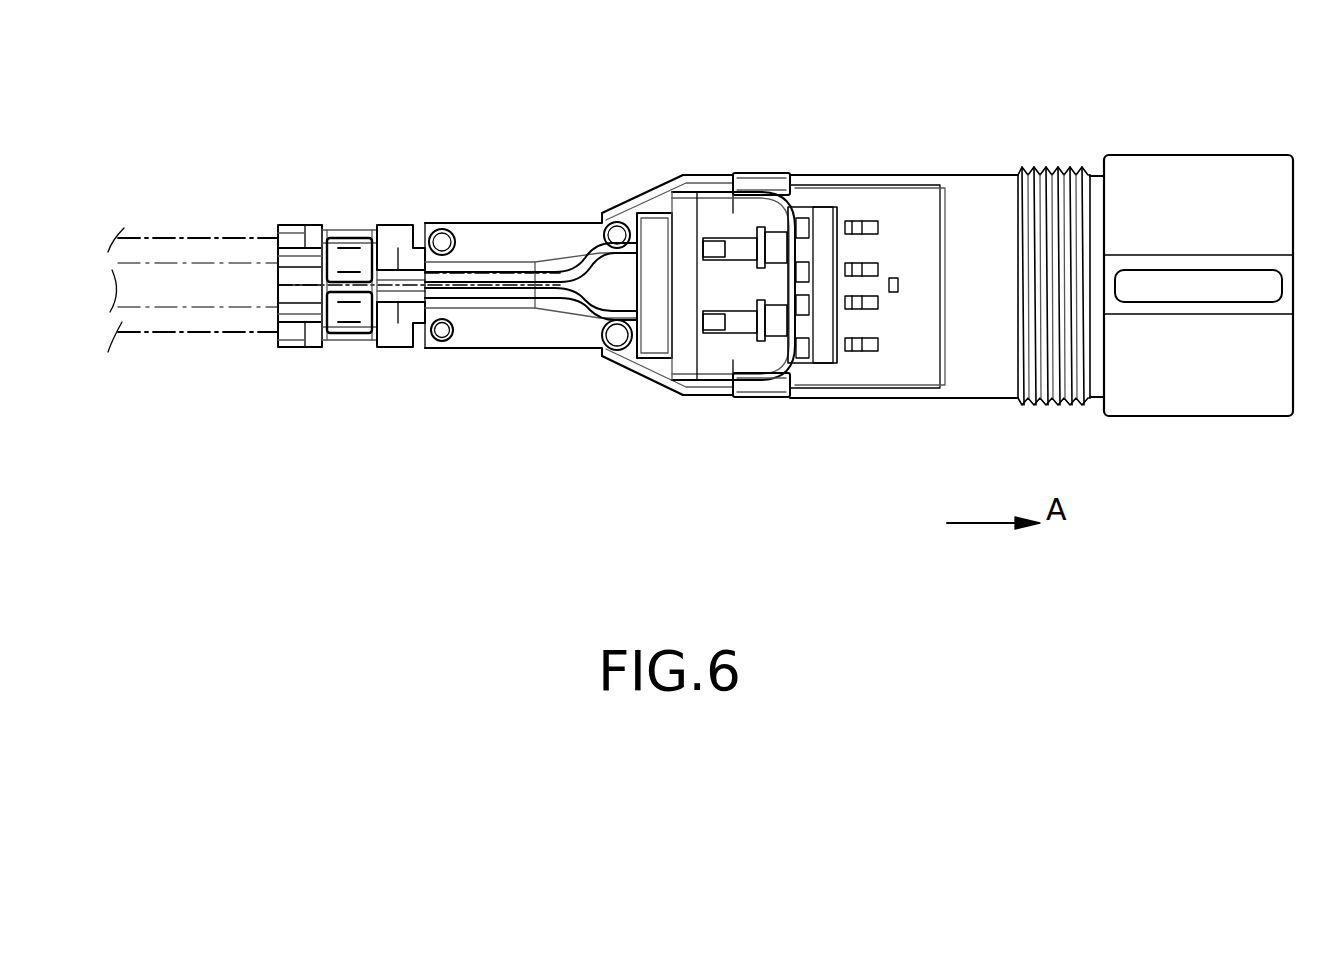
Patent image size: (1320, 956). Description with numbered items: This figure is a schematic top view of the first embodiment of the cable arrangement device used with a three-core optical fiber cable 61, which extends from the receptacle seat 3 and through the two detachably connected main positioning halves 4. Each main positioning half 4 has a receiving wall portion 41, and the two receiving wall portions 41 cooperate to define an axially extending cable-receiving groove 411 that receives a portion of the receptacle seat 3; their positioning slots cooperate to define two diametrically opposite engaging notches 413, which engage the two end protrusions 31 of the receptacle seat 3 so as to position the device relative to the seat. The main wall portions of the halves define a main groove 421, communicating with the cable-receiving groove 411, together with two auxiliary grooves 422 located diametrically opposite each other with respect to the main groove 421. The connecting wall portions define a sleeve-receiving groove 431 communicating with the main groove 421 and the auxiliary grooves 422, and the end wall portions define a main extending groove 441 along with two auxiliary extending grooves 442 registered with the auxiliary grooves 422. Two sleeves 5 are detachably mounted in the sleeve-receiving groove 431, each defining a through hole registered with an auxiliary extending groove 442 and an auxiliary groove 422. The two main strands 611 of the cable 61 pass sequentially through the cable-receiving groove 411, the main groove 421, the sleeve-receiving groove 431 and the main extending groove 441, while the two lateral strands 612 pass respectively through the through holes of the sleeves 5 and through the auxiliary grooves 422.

The receptacle seat 3 is at (988, 185).
The end protrusions 31 is at (765, 183).
The main positioning halves 4 is at (498, 182).
The receiving wall portion 41 is at (640, 196).
The cable-receiving groove 411 is at (705, 214).
The engaging notches 413 is at (713, 197).
The main groove 421 is at (602, 277).
The auxiliary grooves 422 is at (410, 237).
The sleeve-receiving groove 431 is at (347, 345).
The main extending groove 441 is at (285, 282).
The auxiliary extending grooves 442 is at (303, 240).
The sleeves 5 is at (355, 238).
The three-core optical fiber cable 61 is at (142, 345).
The main strands 611 is at (553, 265).
The lateral strands 612 is at (340, 225).